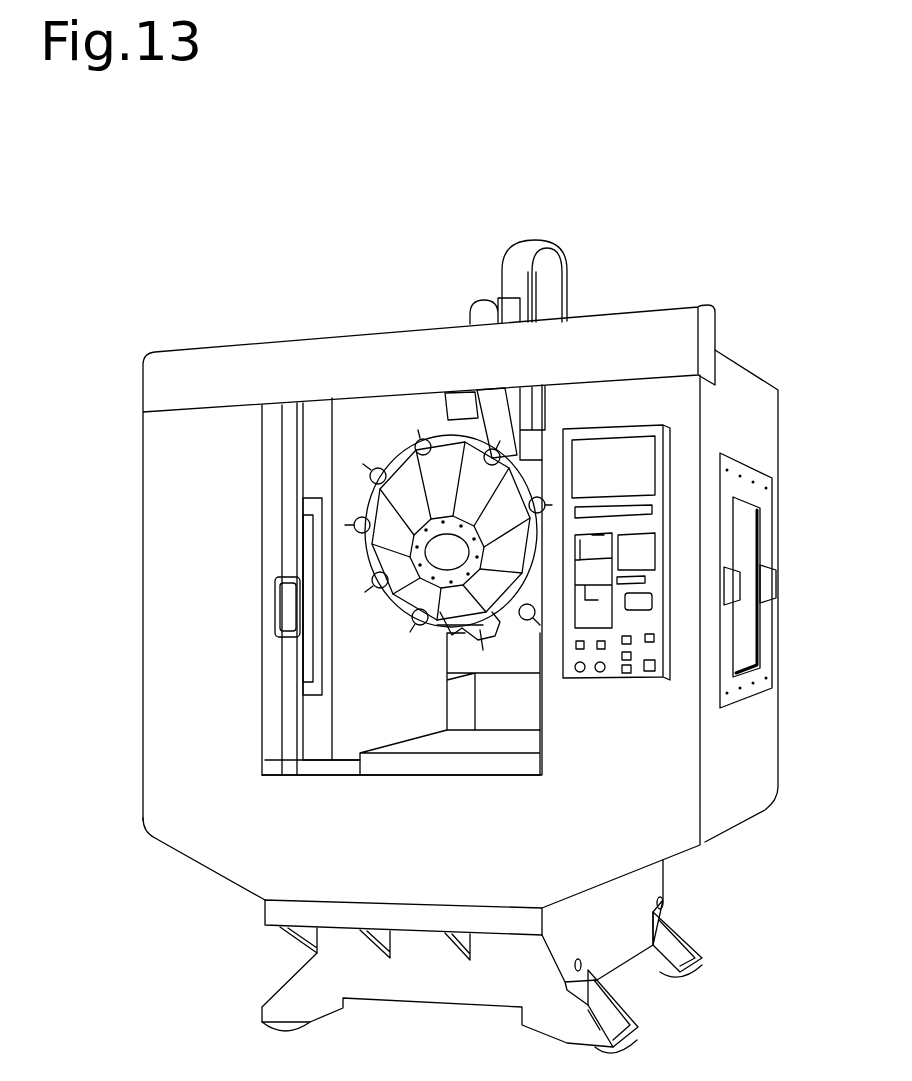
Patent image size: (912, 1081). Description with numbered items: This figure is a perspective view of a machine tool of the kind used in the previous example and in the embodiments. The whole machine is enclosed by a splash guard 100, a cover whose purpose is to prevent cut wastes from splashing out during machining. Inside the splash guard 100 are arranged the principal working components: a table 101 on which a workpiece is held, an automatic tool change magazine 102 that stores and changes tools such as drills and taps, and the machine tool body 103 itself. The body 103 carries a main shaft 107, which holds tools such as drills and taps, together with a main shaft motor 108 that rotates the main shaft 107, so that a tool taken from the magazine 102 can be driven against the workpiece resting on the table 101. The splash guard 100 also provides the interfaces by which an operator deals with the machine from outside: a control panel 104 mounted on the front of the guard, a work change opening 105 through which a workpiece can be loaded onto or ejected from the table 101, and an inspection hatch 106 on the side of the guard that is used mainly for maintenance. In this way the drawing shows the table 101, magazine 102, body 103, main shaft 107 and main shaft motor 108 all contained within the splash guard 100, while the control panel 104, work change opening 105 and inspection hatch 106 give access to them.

The splash guard 100 is at (165, 480).
The table 101 is at (410, 747).
The automatic tool change (ATC) magazine 102 is at (392, 462).
The machine tool body 103 is at (456, 273).
The control panel 104 is at (668, 538).
The work change opening 105 is at (537, 707).
The inspection hatch 106 is at (745, 657).
The main shaft 107 is at (498, 637).
The main shaft motor 108 is at (478, 318).